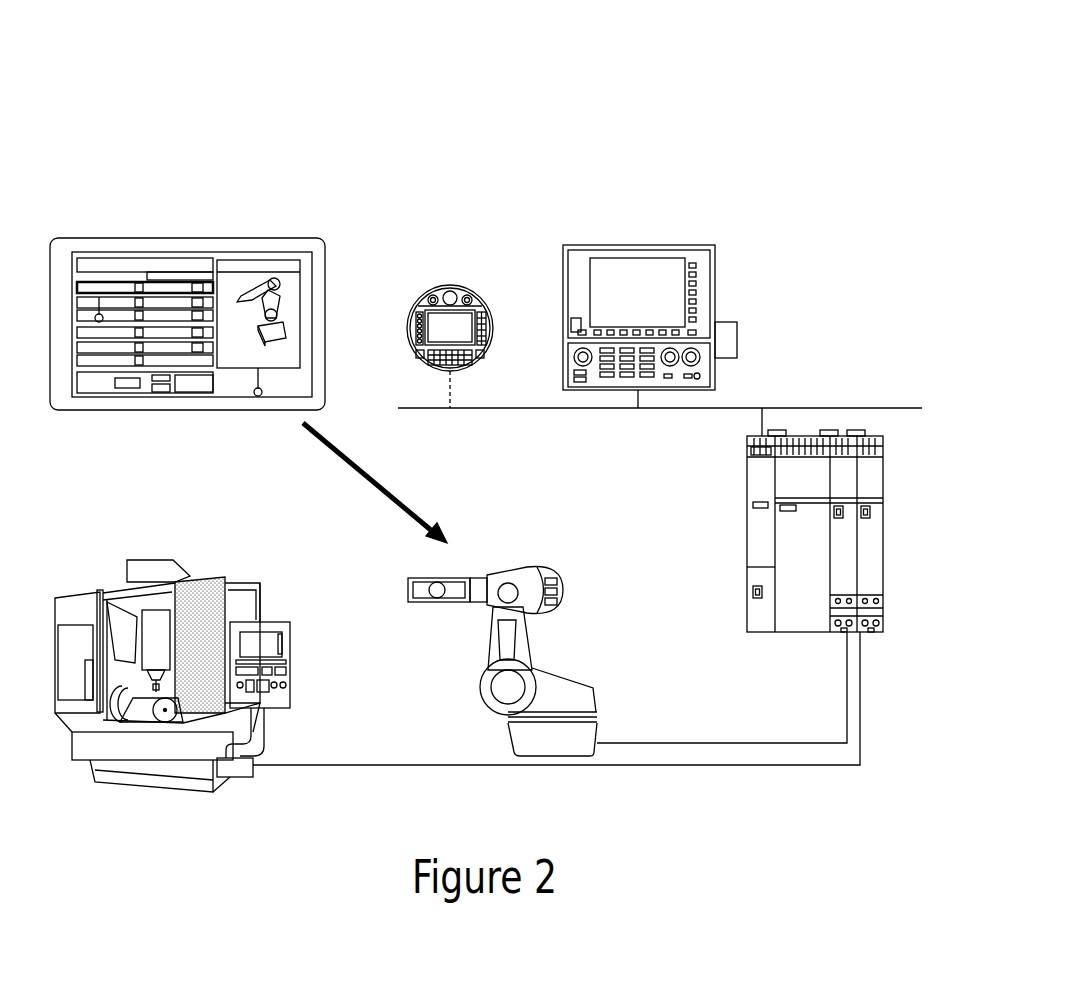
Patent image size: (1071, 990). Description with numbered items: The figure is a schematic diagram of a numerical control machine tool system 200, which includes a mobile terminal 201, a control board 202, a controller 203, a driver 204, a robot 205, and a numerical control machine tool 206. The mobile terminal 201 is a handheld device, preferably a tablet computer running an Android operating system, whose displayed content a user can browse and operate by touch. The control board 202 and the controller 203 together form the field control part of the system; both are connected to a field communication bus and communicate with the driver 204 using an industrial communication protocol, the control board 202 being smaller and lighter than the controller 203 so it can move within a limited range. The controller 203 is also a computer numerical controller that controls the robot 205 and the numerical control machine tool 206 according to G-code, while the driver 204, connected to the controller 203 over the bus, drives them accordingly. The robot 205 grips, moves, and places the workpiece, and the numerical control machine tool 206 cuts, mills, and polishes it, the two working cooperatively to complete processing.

The numerical control machine tool system 200 is at (825, 62).
The mobile terminal 201 is at (167, 238).
The control board 202 is at (449, 285).
The controller 203 is at (640, 245).
The driver 204 is at (747, 553).
The robot 205 is at (480, 685).
The numerical control machine tool 206 is at (203, 578).